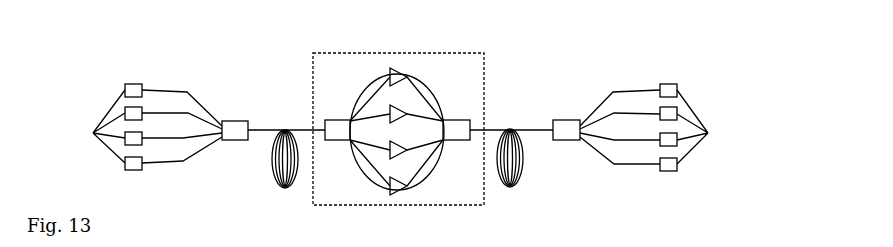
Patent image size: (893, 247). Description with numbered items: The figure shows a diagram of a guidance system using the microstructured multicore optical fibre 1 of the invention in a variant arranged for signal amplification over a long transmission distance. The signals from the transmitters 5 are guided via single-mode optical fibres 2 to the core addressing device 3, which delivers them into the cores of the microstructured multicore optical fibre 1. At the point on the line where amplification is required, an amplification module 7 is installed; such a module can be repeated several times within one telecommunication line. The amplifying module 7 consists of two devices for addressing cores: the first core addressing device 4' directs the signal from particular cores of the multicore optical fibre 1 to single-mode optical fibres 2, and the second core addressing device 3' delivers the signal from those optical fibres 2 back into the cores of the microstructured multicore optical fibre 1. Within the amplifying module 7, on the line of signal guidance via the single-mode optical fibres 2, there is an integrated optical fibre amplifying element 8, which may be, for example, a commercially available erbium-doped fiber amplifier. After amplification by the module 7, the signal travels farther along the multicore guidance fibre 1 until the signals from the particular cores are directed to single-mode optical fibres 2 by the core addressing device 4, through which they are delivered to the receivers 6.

The microstructured multicore optical fibre 1 is at (272, 163).
The single-mode optical fibres 2 is at (180, 157).
The core addressing device 3 is at (236, 105).
The core addressing device 3' is at (459, 104).
The core addressing device 4 is at (569, 113).
The core addressing device 4' is at (336, 106).
The transmitters 5 is at (106, 127).
The receivers 6 is at (691, 127).
The amplification module 7 is at (402, 52).
The optical fibre amplifying element 8 is at (407, 186).